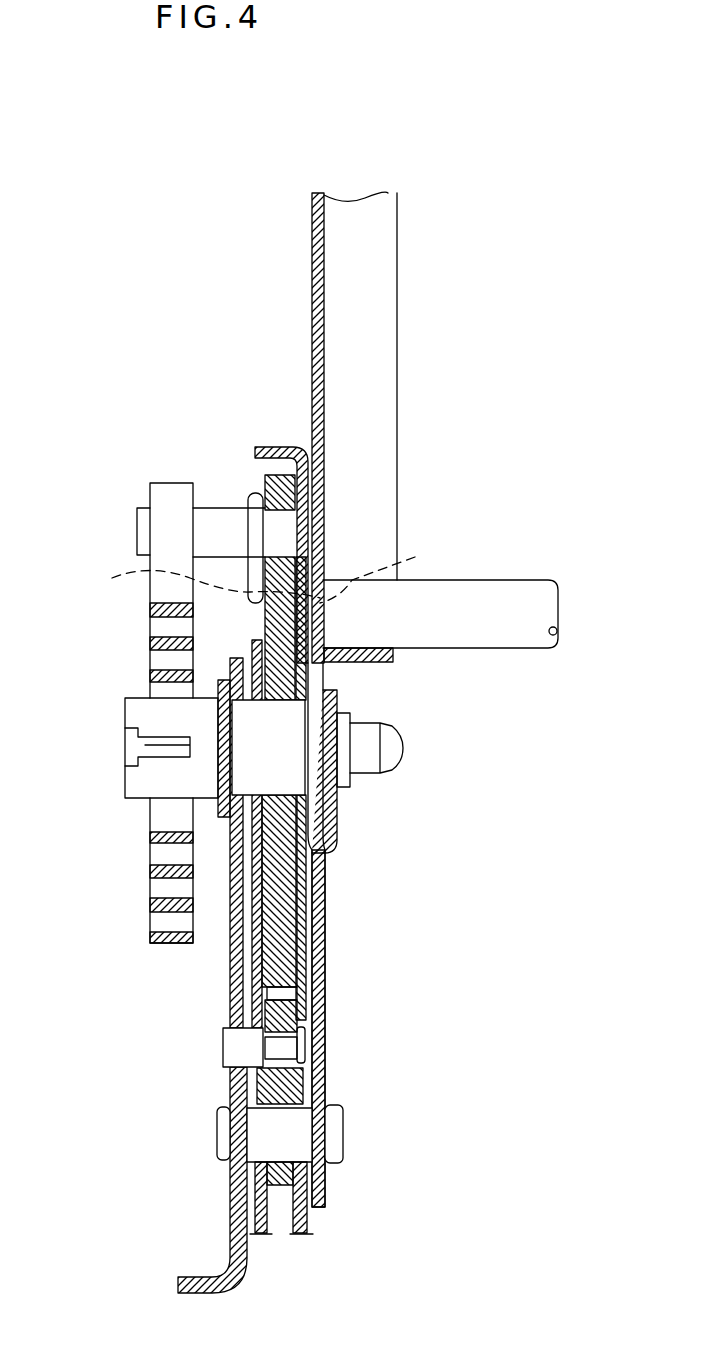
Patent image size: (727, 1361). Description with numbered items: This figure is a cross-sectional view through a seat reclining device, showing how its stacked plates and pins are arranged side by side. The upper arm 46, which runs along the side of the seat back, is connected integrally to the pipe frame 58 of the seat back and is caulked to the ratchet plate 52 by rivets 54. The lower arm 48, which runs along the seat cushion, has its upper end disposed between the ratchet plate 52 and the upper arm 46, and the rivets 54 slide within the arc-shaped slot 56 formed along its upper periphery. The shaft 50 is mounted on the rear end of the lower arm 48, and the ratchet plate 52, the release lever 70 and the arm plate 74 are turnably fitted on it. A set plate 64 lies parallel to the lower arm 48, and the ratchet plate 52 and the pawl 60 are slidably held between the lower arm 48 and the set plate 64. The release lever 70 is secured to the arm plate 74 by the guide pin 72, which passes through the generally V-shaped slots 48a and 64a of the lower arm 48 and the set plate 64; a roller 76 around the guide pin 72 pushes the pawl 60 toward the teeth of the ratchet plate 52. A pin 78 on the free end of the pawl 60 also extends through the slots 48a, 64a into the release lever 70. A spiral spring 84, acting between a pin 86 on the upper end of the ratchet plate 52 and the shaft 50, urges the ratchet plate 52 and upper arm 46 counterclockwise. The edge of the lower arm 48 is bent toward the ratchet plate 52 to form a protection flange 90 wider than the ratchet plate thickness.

The upper arm 46 is at (378, 401).
The lower arm 48 is at (300, 965).
The V-shaped slot 48a is at (318, 1098).
The shaft 50 is at (155, 778).
The ratchet plate 52 is at (323, 853).
The rivets 54 is at (191, 578).
The arc-shaped slot 56 is at (395, 564).
The pipe frame 58 is at (495, 636).
The pawl 60 is at (300, 1010).
The set plate 64 is at (257, 957).
The V-shaped slot 64a is at (228, 1090).
The release lever 70 is at (232, 1008).
The guide pin 72 is at (262, 1135).
The arm plate 74 is at (320, 1078).
The roller 76 is at (283, 1225).
The pin 78 is at (238, 1055).
The spiral spring 84 is at (148, 650).
The pin 86 is at (220, 525).
The protection flange 90 is at (278, 445).